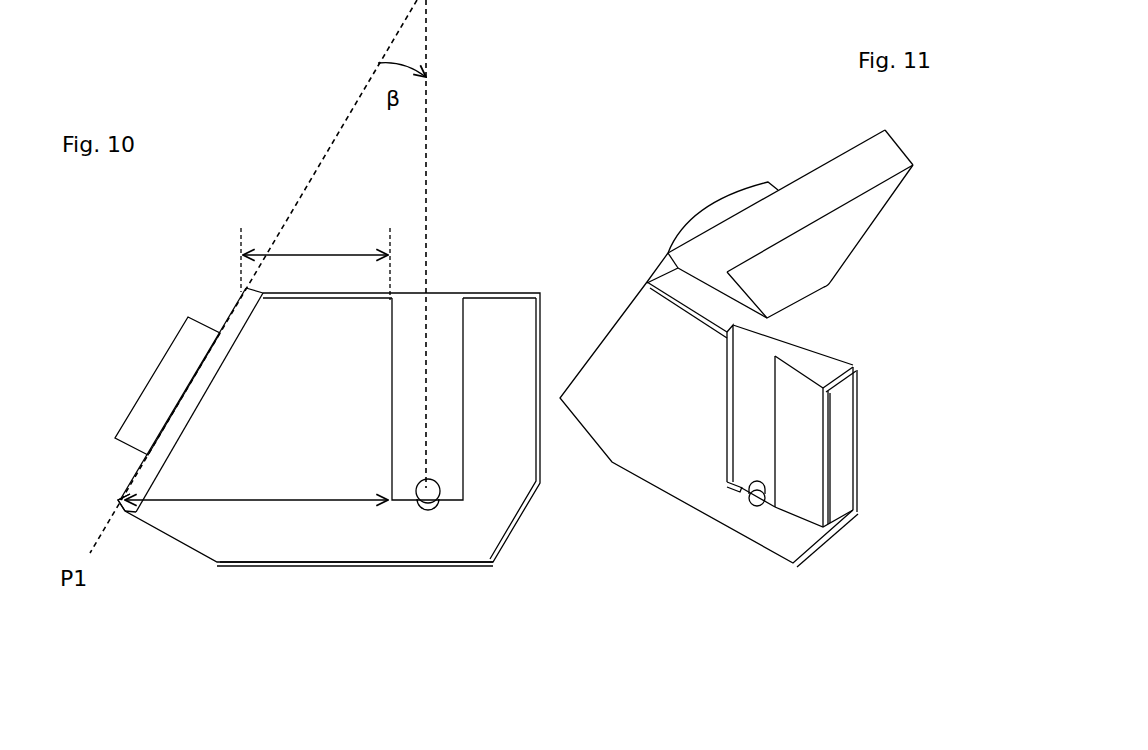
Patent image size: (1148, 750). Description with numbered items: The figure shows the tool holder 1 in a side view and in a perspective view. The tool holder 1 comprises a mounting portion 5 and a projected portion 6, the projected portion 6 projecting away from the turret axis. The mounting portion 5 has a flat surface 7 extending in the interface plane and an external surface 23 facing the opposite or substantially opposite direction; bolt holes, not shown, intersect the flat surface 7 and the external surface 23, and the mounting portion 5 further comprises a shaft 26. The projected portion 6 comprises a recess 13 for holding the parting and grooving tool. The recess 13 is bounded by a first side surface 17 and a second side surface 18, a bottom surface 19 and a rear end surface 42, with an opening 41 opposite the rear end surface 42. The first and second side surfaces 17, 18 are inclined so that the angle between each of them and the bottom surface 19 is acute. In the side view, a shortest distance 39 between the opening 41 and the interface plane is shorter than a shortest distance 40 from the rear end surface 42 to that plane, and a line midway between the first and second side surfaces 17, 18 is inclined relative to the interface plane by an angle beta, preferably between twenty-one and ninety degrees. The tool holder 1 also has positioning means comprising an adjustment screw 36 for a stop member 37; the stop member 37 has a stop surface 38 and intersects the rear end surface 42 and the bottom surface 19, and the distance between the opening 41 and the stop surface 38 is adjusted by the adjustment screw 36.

In FIG. 10, the tool holder 1 is at (194, 90).
In FIG. 11, the tool holder 1 is at (683, 86).
In FIG. 10, the mounting portion 5 is at (237, 318).
In FIG. 11, the mounting portion 5 is at (847, 192).
In FIG. 10, the projected portion 6 is at (388, 549).
In FIG. 11, the projected portion 6 is at (705, 505).
In FIG. 10, the flat surface 7 is at (130, 483).
In FIG. 10, the recess 13 is at (410, 228).
In FIG. 10, the first side surface 17 is at (392, 342).
In FIG. 11, the first side surface 17 is at (732, 385).
In FIG. 10, the second side surface 18 is at (460, 335).
In FIG. 11, the bottom surface 19 is at (753, 438).
In FIG. 11, the external surface 23 is at (830, 253).
In FIG. 10, the shaft 26 is at (166, 382).
In FIG. 11, the shaft 26 is at (723, 205).
In FIG. 10, the adjustment screw 36 is at (427, 567).
In FIG. 10, the stop member 37 is at (430, 506).
In FIG. 11, the stop member 37 is at (755, 503).
In FIG. 11, the stop surface 38 is at (757, 495).
In FIG. 10, the shortest distance 39 is at (315, 240).
In FIG. 10, the shortest distance 40 is at (256, 484).
In FIG. 11, the opening 41 is at (760, 348).
In FIG. 11, the rear end surface 42 is at (738, 488).